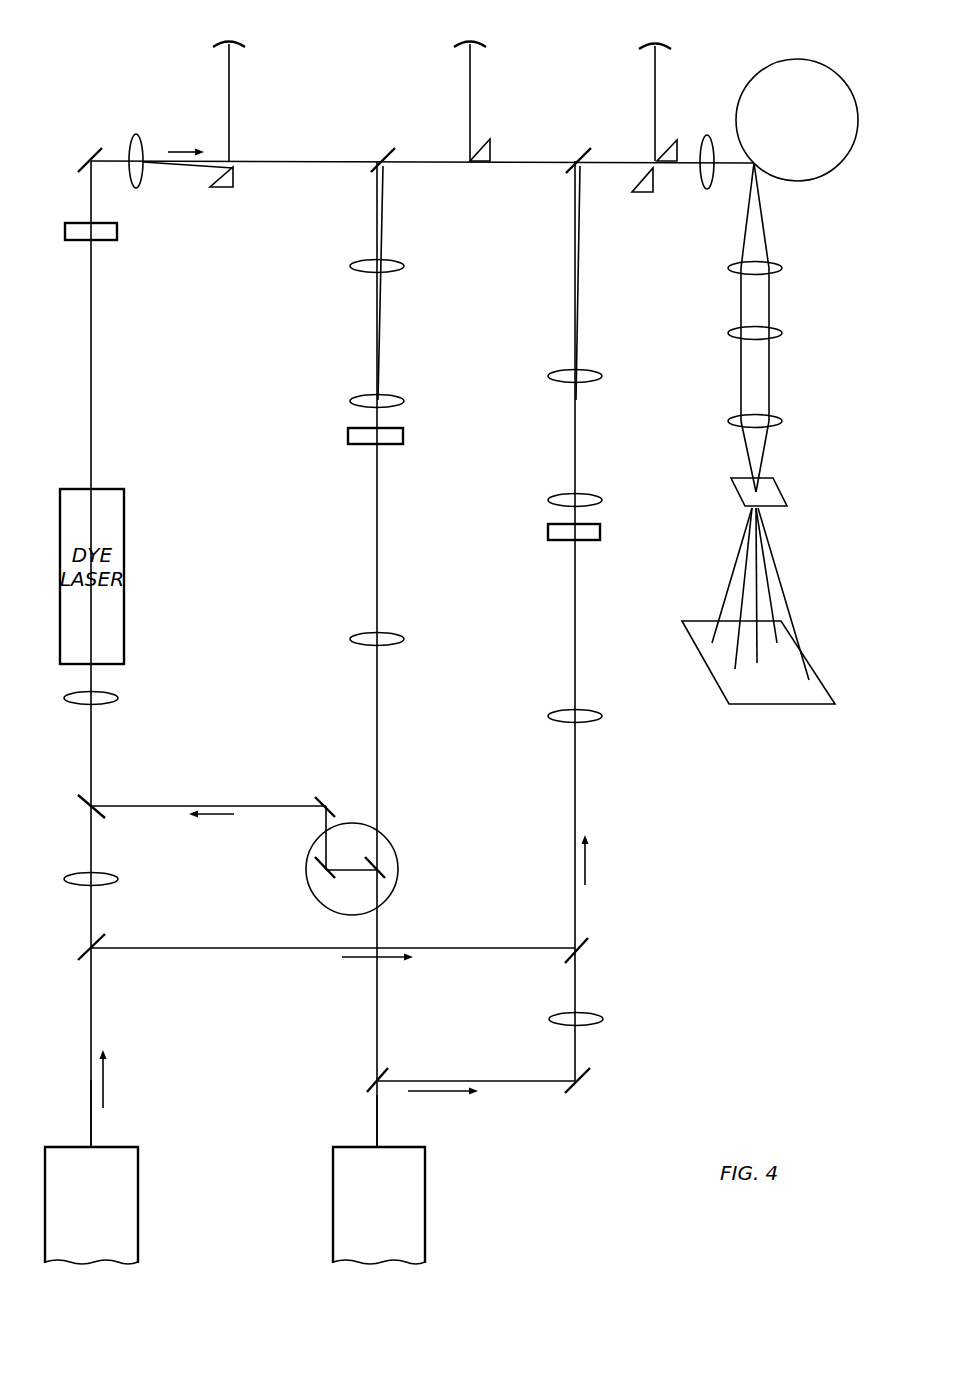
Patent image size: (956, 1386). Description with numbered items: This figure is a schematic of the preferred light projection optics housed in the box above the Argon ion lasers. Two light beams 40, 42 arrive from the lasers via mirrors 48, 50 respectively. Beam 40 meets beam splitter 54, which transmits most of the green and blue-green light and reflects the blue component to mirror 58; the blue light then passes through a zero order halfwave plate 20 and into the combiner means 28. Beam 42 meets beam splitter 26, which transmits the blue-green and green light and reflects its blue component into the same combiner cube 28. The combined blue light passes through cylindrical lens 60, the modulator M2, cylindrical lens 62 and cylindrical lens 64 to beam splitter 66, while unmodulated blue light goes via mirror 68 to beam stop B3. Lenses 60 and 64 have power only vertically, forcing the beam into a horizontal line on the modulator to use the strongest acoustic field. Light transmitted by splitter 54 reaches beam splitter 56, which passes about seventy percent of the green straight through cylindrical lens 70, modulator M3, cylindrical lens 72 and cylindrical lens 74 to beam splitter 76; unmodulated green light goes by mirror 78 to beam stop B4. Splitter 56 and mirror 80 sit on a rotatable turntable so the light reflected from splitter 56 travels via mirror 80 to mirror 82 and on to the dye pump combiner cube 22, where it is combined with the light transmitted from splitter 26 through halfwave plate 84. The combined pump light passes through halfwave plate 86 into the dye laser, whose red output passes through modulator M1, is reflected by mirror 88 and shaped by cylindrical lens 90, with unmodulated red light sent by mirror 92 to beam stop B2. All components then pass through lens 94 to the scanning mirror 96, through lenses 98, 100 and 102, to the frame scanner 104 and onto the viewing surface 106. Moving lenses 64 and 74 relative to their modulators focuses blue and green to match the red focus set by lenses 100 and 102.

The zero order halfwave plate 20 is at (603, 1020).
The dye pump combiner cube 22 is at (78, 804).
The beam splitter 26 is at (78, 945).
The combiner means 28 is at (590, 942).
The light beam 40 is at (377, 1125).
The light beam 42 is at (92, 1125).
The mirror 48 is at (425, 1225).
The mirror 50 is at (138, 1223).
The beam splitter 54 is at (367, 1082).
The beam splitter 56 is at (385, 873).
The mirror 58 is at (571, 1092).
The cylindrical lens 60 is at (600, 714).
The cylindrical lens 62 is at (600, 501).
The cylindrical lens 64 is at (600, 380).
The beam splitter 66 is at (587, 147).
The mirror 68 is at (668, 143).
The cylindrical lens 70 is at (404, 636).
The cylindrical lens 72 is at (404, 398).
The cylindrical lens 74 is at (404, 263).
The beam splitter 76 is at (386, 147).
The mirror 78 is at (492, 147).
The mirror 80 is at (320, 881).
The mirror 82 is at (318, 797).
The zero order halfwave plate 84 is at (118, 879).
The zero order halfwave plate 86 is at (118, 696).
The mirror 88 is at (95, 150).
The cylindrical lens 90 is at (141, 134).
The mirror 92 is at (236, 184).
The lens 94 is at (708, 136).
The scanning mirror 96 is at (816, 170).
The lens 98 is at (782, 268).
The lens 100 is at (782, 336).
The final projection lens 102 is at (782, 421).
The frame scanner 104 is at (777, 496).
The viewing surface 106 is at (785, 695).
The modulator M1 is at (117, 232).
The modulator M2 is at (600, 532).
The modulator M3 is at (403, 437).
The beam stop B2 is at (236, 37).
The beam stop B3 is at (662, 37).
The beam stop B4 is at (477, 36).